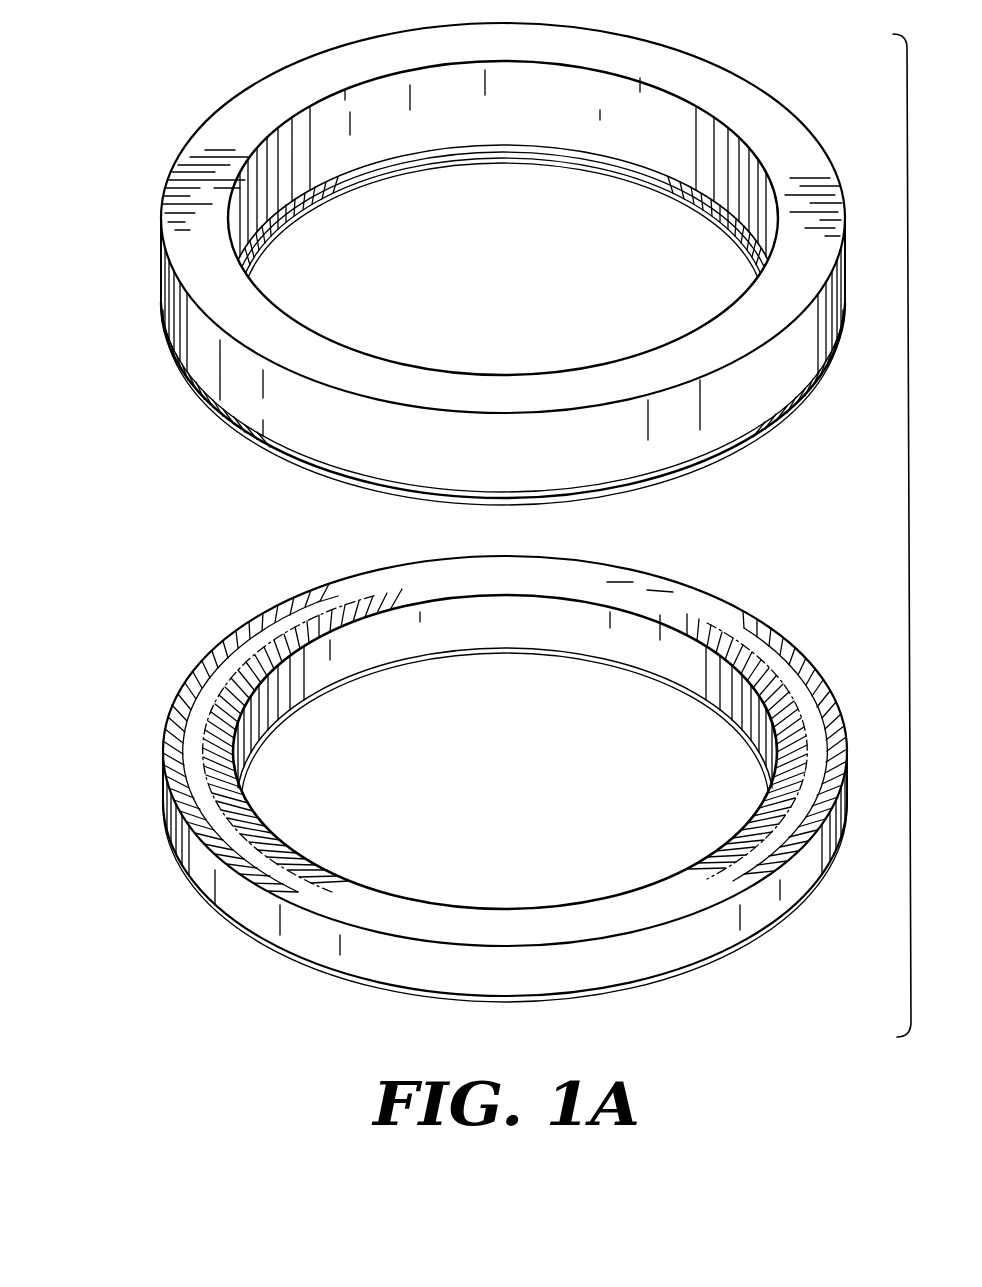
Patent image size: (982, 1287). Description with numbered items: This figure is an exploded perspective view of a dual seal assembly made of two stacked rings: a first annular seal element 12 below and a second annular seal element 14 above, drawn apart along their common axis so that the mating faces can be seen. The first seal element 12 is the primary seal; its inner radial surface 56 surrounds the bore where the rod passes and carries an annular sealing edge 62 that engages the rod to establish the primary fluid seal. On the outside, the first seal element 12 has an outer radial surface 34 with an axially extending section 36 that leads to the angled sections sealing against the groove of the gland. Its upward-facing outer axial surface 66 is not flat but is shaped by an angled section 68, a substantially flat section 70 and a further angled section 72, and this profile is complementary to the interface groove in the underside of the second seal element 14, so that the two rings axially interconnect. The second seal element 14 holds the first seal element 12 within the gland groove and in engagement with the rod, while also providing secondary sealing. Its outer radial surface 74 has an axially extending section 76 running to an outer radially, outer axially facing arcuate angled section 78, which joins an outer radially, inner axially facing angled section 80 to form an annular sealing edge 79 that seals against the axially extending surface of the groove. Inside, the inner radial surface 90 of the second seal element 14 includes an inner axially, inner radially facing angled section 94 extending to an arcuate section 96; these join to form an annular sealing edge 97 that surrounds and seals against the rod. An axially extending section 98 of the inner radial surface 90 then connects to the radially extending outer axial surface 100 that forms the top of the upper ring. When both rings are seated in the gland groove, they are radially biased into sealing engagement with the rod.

The first annular seal element 12 is at (458, 782).
The second annular seal element 14 is at (457, 280).
The outer radial surface 34 is at (150, 838).
The axially extending section 36 is at (250, 910).
The inner radial surface 56 is at (638, 690).
The annular sealing edge 62 is at (525, 652).
The outer axial surface 66 is at (505, 742).
The angled section 68 is at (348, 608).
The substantially flat section 70 is at (763, 643).
The angled section 72 is at (222, 846).
The outer radial surface 74 is at (474, 417).
The axially extending section 76 is at (240, 396).
The arcuate angled section 78 is at (257, 435).
The annular sealing edge 79 is at (303, 462).
The angled section 80 is at (343, 480).
The inner radial surface 90 is at (662, 190).
The angled section 94 is at (477, 156).
The arcuate section 96 is at (412, 158).
The annular sealing edge 97 is at (350, 180).
The axially extending section 98 is at (583, 118).
The outer axial surface 100 is at (693, 78).